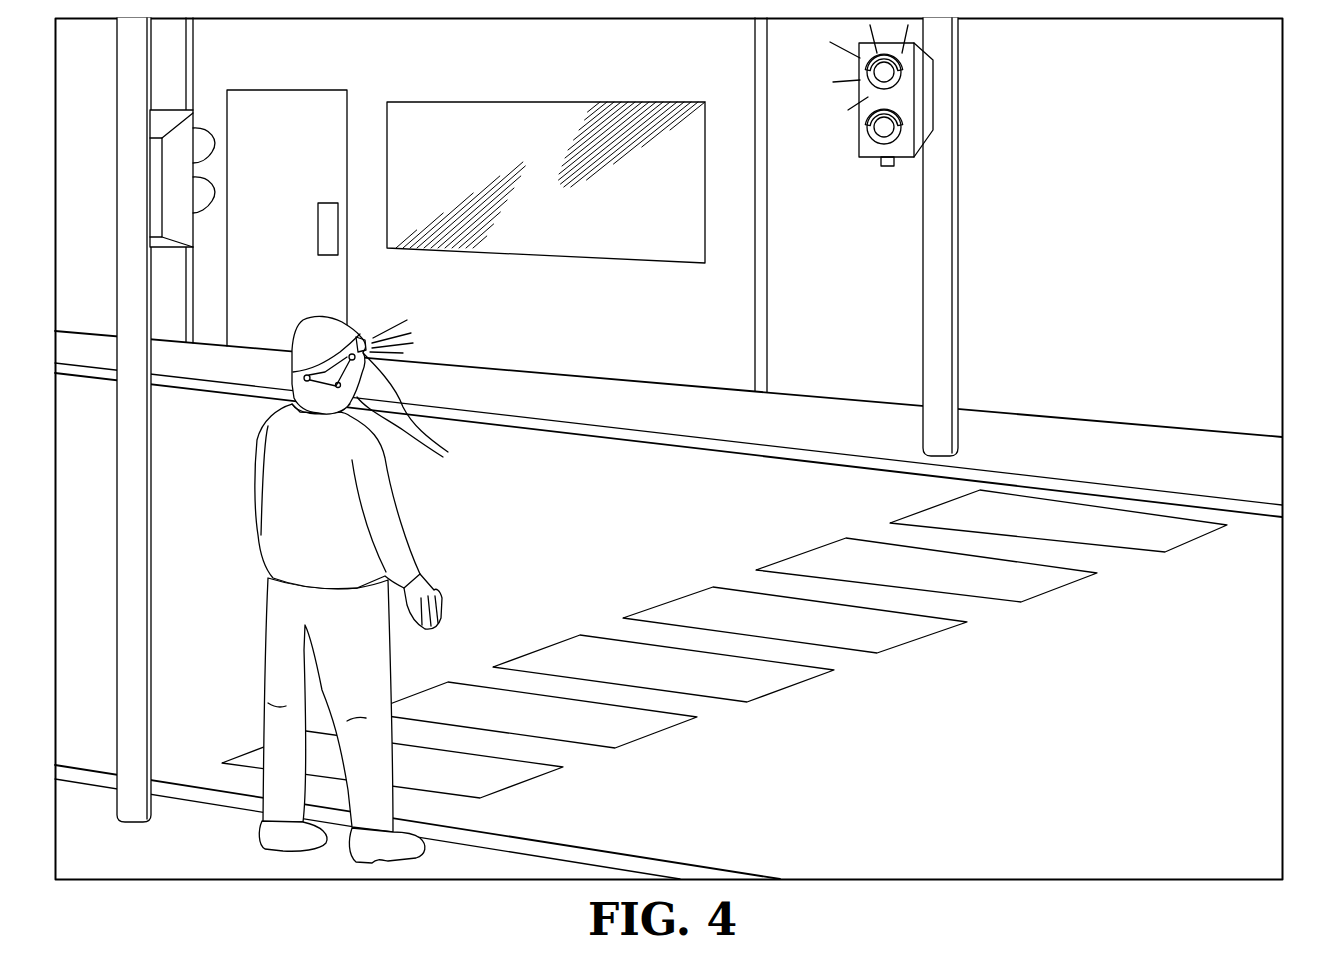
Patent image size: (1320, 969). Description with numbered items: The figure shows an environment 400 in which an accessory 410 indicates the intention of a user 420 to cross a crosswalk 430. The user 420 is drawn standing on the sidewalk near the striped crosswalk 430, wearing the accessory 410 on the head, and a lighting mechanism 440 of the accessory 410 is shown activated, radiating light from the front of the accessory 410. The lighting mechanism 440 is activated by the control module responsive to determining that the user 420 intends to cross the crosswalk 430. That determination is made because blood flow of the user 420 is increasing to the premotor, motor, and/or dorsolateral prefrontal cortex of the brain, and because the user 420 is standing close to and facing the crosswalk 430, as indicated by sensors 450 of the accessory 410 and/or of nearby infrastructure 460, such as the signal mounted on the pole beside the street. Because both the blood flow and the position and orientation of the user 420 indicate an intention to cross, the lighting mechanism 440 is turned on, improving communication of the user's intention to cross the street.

The environment 400 is at (1130, 106).
The accessory 410 is at (298, 328).
The user 420 is at (278, 502).
The crosswalk 430 is at (682, 605).
The lighting mechanism 440 is at (370, 333).
The sensors 450 is at (890, 167).
The nearby infrastructure 460 is at (945, 310).